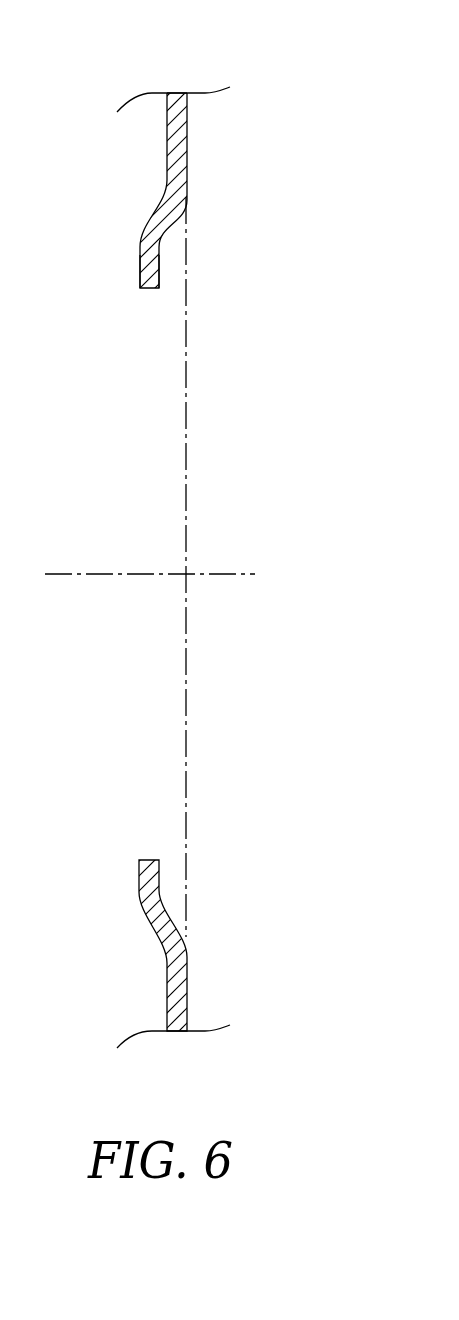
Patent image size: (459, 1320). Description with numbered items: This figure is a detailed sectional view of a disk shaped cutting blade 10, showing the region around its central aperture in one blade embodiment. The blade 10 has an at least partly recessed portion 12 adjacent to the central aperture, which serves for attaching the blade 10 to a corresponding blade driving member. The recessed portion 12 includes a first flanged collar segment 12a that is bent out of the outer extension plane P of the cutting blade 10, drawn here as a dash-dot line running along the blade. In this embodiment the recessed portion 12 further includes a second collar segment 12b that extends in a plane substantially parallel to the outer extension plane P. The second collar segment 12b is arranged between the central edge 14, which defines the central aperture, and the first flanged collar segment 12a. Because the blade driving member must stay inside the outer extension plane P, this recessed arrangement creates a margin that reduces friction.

The disk shaped cutting blade 10 is at (88, 122).
The at least partly recessed portion 12 is at (108, 221).
The first flanged collar segment 12a is at (173, 218).
The second collar segment 12b is at (140, 268).
The central edge 14 is at (150, 293).
The outer extension plane P is at (187, 387).